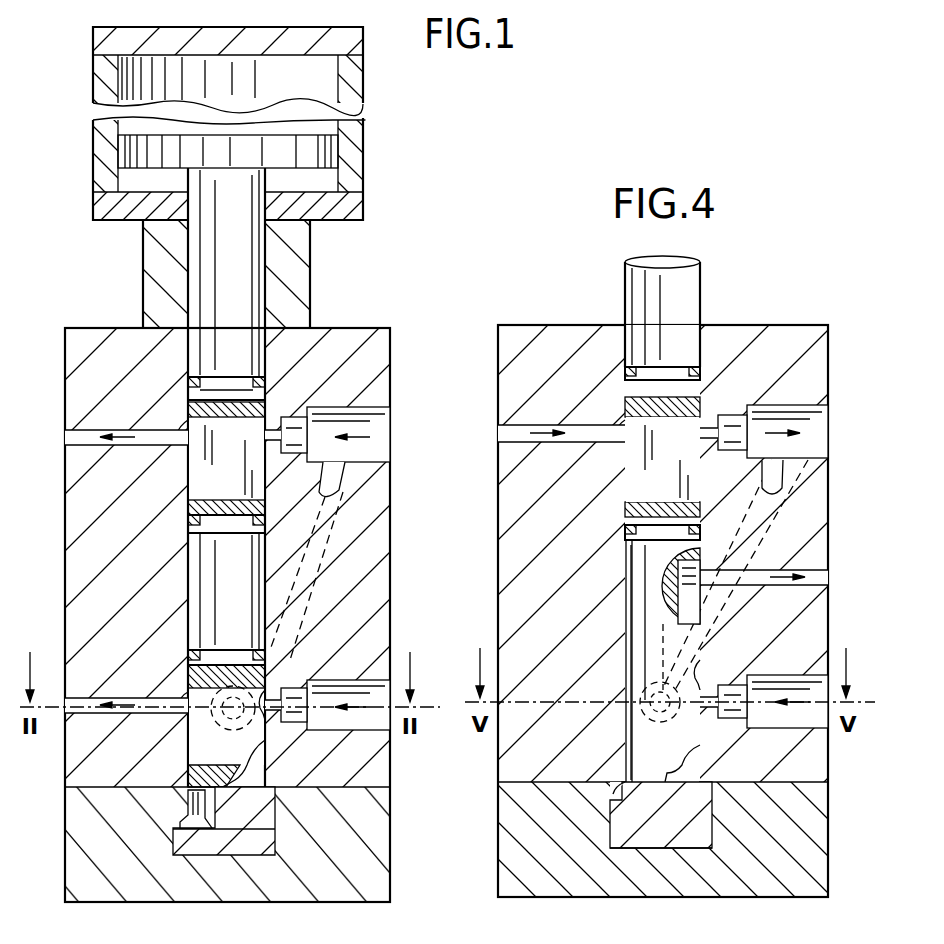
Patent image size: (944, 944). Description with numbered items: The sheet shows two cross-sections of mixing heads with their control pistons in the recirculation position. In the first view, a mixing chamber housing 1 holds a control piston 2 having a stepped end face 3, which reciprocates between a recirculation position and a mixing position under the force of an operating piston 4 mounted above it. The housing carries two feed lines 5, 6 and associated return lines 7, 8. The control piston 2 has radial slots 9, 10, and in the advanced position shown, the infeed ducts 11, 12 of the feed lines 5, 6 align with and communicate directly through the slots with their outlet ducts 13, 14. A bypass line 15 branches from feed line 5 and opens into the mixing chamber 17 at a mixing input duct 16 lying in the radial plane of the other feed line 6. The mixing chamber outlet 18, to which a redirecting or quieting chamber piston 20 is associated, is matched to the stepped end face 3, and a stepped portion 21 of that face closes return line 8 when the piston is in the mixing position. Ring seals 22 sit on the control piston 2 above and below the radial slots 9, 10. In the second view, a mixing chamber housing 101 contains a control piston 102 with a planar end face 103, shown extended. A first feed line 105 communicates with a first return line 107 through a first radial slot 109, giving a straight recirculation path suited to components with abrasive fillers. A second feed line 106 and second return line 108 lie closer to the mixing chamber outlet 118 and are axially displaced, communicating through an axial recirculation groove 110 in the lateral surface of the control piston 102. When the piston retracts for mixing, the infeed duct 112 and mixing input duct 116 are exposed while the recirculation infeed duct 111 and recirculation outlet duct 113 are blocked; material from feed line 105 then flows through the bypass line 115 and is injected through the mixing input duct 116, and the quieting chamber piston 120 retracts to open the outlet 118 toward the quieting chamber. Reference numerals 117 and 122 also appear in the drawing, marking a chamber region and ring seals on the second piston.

In FIG. 1, the mixing chamber housing 1 is at (73, 588).
In FIG. 1, the control piston 2 is at (258, 255).
In FIG. 1, the stepped end face 3 is at (184, 816).
In FIG. 1, the operating piston 4 is at (358, 160).
In FIG. 1, the feed line 5 is at (380, 412).
In FIG. 1, the feed line 6 is at (370, 730).
In FIG. 1, the return line 7 is at (65, 437).
In FIG. 1, the return line 8 is at (67, 730).
In FIG. 1, the radial slot 9 is at (197, 482).
In FIG. 1, the radial slot 10 is at (190, 737).
In FIG. 1, the infeed duct 11 is at (266, 410).
In FIG. 1, the infeed duct 12 is at (275, 721).
In FIG. 1, the outlet duct 13 is at (188, 421).
In FIG. 1, the outlet duct 14 is at (188, 697).
In FIG. 1, the bypass line 15 is at (350, 467).
In FIG. 1, the mixing input duct 16 is at (188, 665).
In FIG. 1, the mixing chamber 17 is at (254, 765).
In FIG. 1, the mixing chamber outlet 18 is at (274, 810).
In FIG. 1, the redirecting piston 20 is at (262, 838).
In FIG. 1, the stepped portion 21 is at (184, 772).
In FIG. 1, the ring seals 22 is at (310, 330).
In FIG. 4, the mixing chamber housing 101 is at (502, 546).
In FIG. 4, the control piston 102 is at (696, 290).
In FIG. 4, the planar end face 103 is at (610, 800).
In FIG. 4, the first feed line 105 is at (820, 422).
In FIG. 4, the second feed line 106 is at (806, 718).
In FIG. 4, the first return line 107 is at (498, 438).
In FIG. 4, the second return line 108 is at (826, 582).
In FIG. 4, the first radial slot 109 is at (640, 489).
In FIG. 4, the axial recirculation groove 110 is at (696, 601).
In FIG. 4, the recirculation infeed duct 111 is at (700, 407).
In FIG. 4, the infeed duct 112 is at (700, 672).
In FIG. 4, the recirculation outlet duct 113 is at (625, 415).
In FIG. 4, the bypass line 115 is at (788, 469).
In FIG. 4, the mixing input duct 116 is at (625, 680).
In FIG. 4, the passage 117 is at (693, 764).
In FIG. 4, the mixing chamber outlet 118 is at (712, 801).
In FIG. 4, the quieting chamber piston 120 is at (700, 830).
In FIG. 4, the sealing ring 122 is at (703, 373).